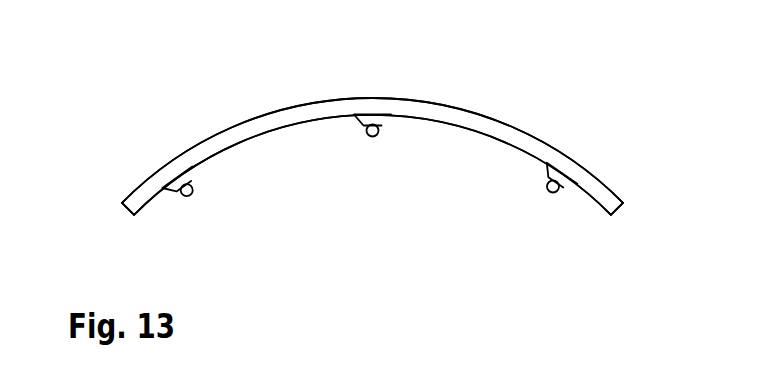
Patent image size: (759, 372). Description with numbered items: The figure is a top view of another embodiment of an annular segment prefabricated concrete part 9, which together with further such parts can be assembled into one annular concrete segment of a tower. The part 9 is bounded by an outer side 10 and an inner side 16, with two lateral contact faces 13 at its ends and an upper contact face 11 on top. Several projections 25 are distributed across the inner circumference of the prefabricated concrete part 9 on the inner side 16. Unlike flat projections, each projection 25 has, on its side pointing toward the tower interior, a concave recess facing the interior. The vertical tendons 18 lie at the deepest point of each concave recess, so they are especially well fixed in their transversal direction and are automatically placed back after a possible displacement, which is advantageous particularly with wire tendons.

The annular segment prefabricated concrete part 9 is at (505, 117).
The outer side 10 is at (373, 98).
The upper contact face 11 is at (222, 142).
The lateral contact faces 13 is at (134, 215).
The inner side 16 is at (217, 157).
The vertical tendons 18 is at (192, 198).
The projections 25 is at (176, 193).